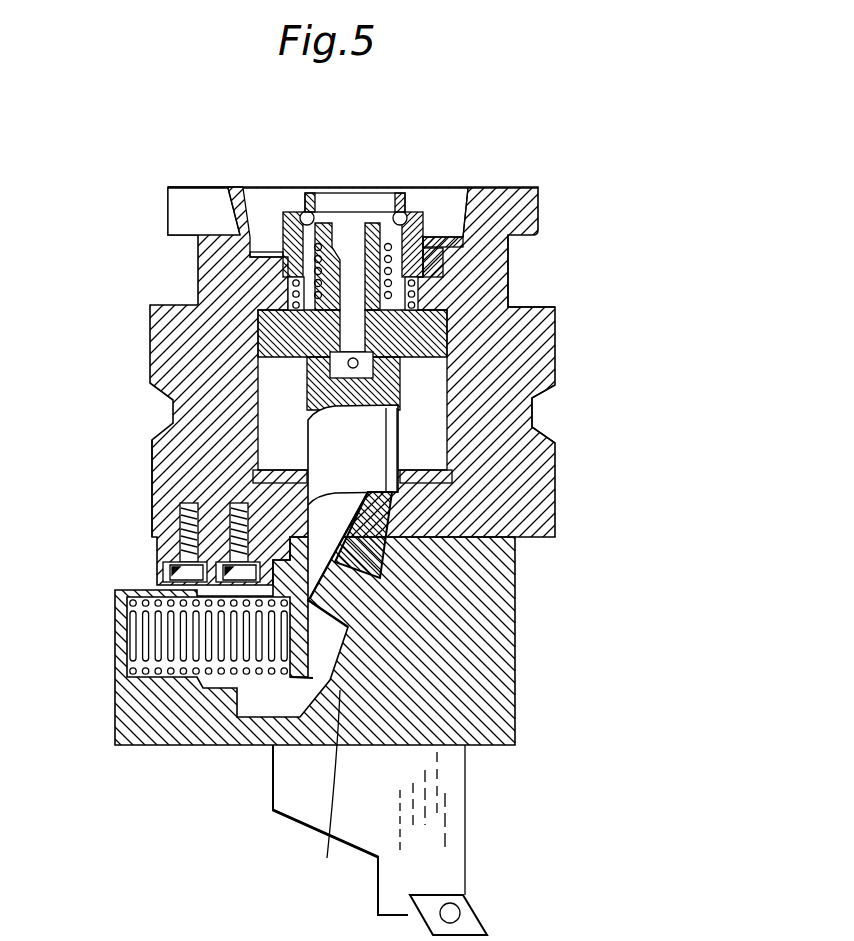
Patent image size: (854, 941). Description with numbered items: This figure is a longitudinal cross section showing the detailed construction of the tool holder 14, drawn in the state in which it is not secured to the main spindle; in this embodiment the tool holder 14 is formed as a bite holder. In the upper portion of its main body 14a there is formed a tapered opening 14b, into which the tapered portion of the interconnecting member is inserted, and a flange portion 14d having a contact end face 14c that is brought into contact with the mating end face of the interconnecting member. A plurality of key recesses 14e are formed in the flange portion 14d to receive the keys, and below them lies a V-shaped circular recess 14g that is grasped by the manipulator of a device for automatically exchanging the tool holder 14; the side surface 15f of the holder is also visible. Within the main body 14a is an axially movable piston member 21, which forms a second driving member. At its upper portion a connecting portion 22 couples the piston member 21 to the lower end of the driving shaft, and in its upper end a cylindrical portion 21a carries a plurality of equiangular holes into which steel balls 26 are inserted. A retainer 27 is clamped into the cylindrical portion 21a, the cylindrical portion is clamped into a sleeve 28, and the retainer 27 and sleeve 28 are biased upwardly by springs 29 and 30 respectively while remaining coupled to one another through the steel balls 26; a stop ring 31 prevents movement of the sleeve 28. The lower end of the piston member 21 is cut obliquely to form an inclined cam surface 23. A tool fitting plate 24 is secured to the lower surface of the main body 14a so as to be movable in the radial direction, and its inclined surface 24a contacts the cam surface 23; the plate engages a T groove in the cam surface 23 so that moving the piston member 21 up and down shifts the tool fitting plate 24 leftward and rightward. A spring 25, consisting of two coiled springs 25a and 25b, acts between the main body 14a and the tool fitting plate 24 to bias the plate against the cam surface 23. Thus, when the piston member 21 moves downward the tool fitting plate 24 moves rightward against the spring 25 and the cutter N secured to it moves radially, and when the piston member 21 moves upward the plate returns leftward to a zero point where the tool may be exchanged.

The tool holder 14 is at (562, 531).
The main body 14a is at (158, 465).
The tapered opening 14b is at (250, 230).
The contact end face 14c is at (203, 187).
The flange portion 14d is at (512, 195).
The key recess 14e is at (185, 207).
The V-shaped circular recess 14g is at (545, 432).
The housing side surface 15f is at (510, 292).
The piston member 21 is at (353, 473).
The cylindrical portion 21a is at (401, 196).
The connecting portion 22 is at (260, 335).
The inclined cam surface 23 is at (333, 795).
The tool fitting plate 24 is at (520, 675).
The inclined surface 24a is at (392, 548).
The spring 25 is at (140, 655).
The coiled spring 25a is at (140, 627).
The coiled spring 25b is at (162, 680).
The steel ball 26 is at (301, 212).
The retainer 27 is at (320, 218).
The sleeve 28 is at (432, 292).
The spring 29 is at (433, 243).
The spring 30 is at (292, 290).
The stop ring 31 is at (458, 250).
The cutter N is at (473, 925).